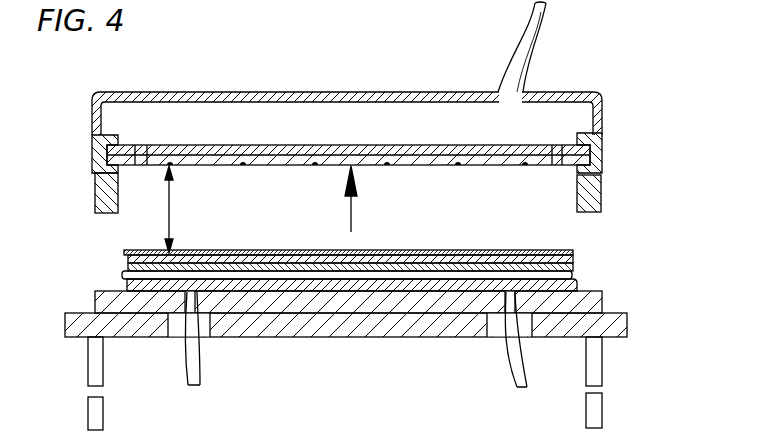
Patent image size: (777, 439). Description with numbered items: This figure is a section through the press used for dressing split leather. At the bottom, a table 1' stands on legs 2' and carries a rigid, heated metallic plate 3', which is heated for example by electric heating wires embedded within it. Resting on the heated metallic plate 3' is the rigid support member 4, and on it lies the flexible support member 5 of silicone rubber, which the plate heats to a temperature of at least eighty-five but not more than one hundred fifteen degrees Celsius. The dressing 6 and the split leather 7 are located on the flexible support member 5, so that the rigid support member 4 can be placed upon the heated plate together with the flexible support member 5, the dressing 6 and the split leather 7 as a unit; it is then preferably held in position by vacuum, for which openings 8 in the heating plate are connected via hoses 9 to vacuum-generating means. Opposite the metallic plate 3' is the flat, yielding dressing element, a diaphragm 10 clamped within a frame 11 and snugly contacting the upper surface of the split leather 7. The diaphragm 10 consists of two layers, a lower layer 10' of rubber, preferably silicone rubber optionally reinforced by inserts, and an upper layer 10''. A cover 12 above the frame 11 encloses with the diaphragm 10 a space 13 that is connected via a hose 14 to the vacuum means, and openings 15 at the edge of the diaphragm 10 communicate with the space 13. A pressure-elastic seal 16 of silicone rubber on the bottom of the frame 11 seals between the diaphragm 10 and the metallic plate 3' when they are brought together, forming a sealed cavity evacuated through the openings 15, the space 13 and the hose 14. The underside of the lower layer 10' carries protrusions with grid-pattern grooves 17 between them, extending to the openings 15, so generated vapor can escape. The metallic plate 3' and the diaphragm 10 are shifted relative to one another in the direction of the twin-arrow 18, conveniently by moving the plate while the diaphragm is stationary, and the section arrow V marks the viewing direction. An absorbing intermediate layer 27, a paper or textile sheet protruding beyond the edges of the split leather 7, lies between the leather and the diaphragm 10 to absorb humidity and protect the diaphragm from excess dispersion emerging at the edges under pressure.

The table 1' is at (389, 337).
The legs 2' is at (376, 384).
The heated metallic plate 3' is at (404, 308).
The rigid support member 4 is at (543, 286).
The flexible support member 5 is at (560, 273).
The dressing 6 is at (485, 268).
The split leather 7 is at (422, 260).
The openings 8 is at (205, 335).
The hoses 9 is at (187, 386).
The diaphragm 10 is at (348, 189).
The lower layer 10' is at (348, 139).
The upper layer 10'' is at (348, 99).
The frame 11 is at (97, 143).
The cover 12 is at (604, 108).
The space 13 is at (333, 120).
The hose 14 is at (520, 38).
The openings 15 is at (143, 150).
The seal 16 is at (100, 200).
The grooves 17 is at (243, 168).
The twin-arrow 18 is at (172, 222).
The intermediate layer 27 is at (150, 251).
The section arrow V is at (386, 236).